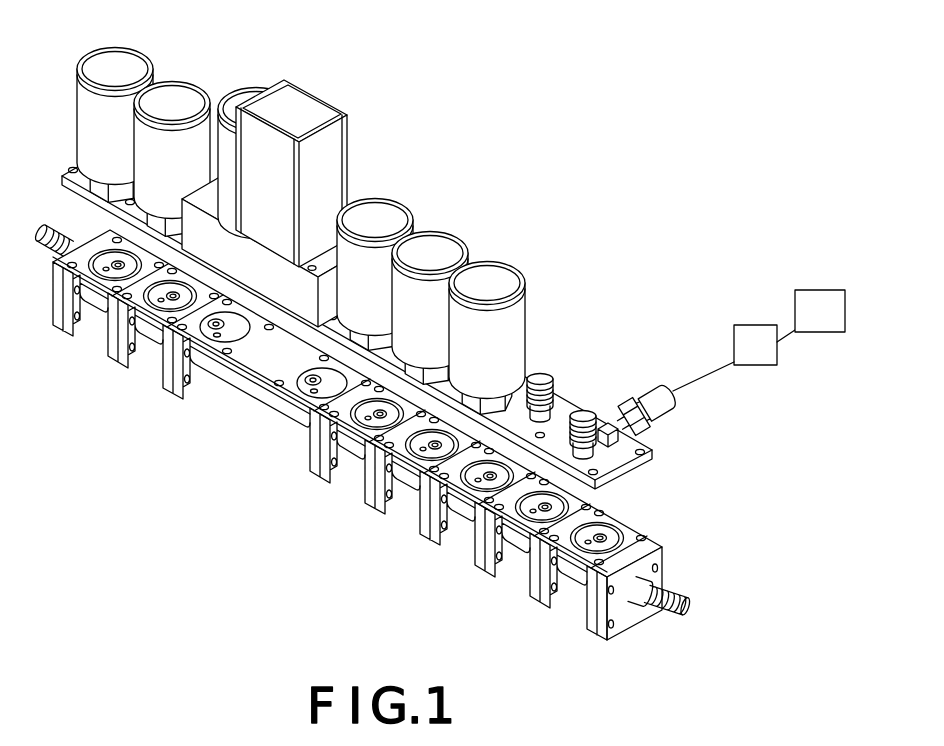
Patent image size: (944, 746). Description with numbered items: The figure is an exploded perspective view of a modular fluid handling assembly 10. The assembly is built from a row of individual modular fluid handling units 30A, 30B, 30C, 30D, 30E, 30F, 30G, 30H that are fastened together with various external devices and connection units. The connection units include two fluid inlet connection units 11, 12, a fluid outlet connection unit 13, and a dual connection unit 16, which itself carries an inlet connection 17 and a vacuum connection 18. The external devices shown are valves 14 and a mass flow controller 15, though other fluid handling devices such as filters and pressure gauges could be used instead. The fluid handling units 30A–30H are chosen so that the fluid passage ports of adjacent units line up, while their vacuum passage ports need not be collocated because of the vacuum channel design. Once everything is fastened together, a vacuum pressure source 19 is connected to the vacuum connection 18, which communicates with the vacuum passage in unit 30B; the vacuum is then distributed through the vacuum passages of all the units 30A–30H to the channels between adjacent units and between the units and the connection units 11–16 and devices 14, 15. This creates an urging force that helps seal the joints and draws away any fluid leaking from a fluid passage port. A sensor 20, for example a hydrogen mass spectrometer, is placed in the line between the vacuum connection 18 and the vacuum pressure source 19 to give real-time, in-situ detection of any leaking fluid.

The modular fluid handling assembly 10 is at (437, 350).
The fluid inlet connection unit 11 is at (663, 546).
The fluid inlet connection unit 12 is at (542, 375).
The fluid outlet connection unit 13 is at (46, 238).
The valves 14 is at (301, 209).
The mass flow controller 15 is at (331, 101).
The dual connection unit 16 is at (609, 420).
The inlet connection 17 is at (582, 411).
The vacuum connection 18 is at (665, 389).
The vacuum pressure source 19 is at (834, 323).
The sensor 20 is at (770, 357).
The modular fluid handling unit 30A is at (584, 630).
The modular fluid handling unit 30B is at (528, 598).
The modular fluid handling unit 30C is at (476, 565).
The modular fluid handling unit 30D is at (421, 534).
The modular fluid handling unit 30E is at (364, 501).
The modular fluid handling unit 30F is at (309, 464).
The modular fluid handling unit 30G is at (131, 357).
The modular fluid handling unit 30H is at (70, 326).